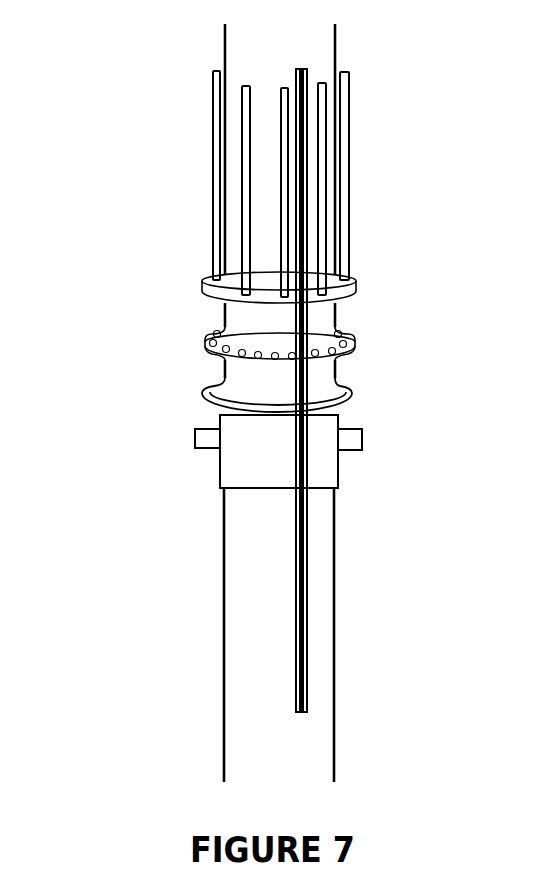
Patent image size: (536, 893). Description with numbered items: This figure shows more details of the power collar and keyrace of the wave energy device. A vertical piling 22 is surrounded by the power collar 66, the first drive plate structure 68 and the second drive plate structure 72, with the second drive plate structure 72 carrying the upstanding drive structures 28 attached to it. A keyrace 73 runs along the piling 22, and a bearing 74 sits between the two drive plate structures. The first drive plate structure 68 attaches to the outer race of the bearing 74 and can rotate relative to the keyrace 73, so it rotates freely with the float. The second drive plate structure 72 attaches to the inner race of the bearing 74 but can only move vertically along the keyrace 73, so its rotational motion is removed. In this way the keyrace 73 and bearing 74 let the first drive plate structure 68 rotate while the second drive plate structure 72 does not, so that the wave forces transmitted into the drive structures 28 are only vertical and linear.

The piling 22 is at (270, 622).
The drive structures 28 is at (248, 195).
The keyrace 73 is at (293, 245).
The second drive plate structure 72 is at (352, 291).
The bearing 74 is at (220, 350).
The first drive plate structure 68 is at (347, 403).
The power collar 66 is at (235, 463).